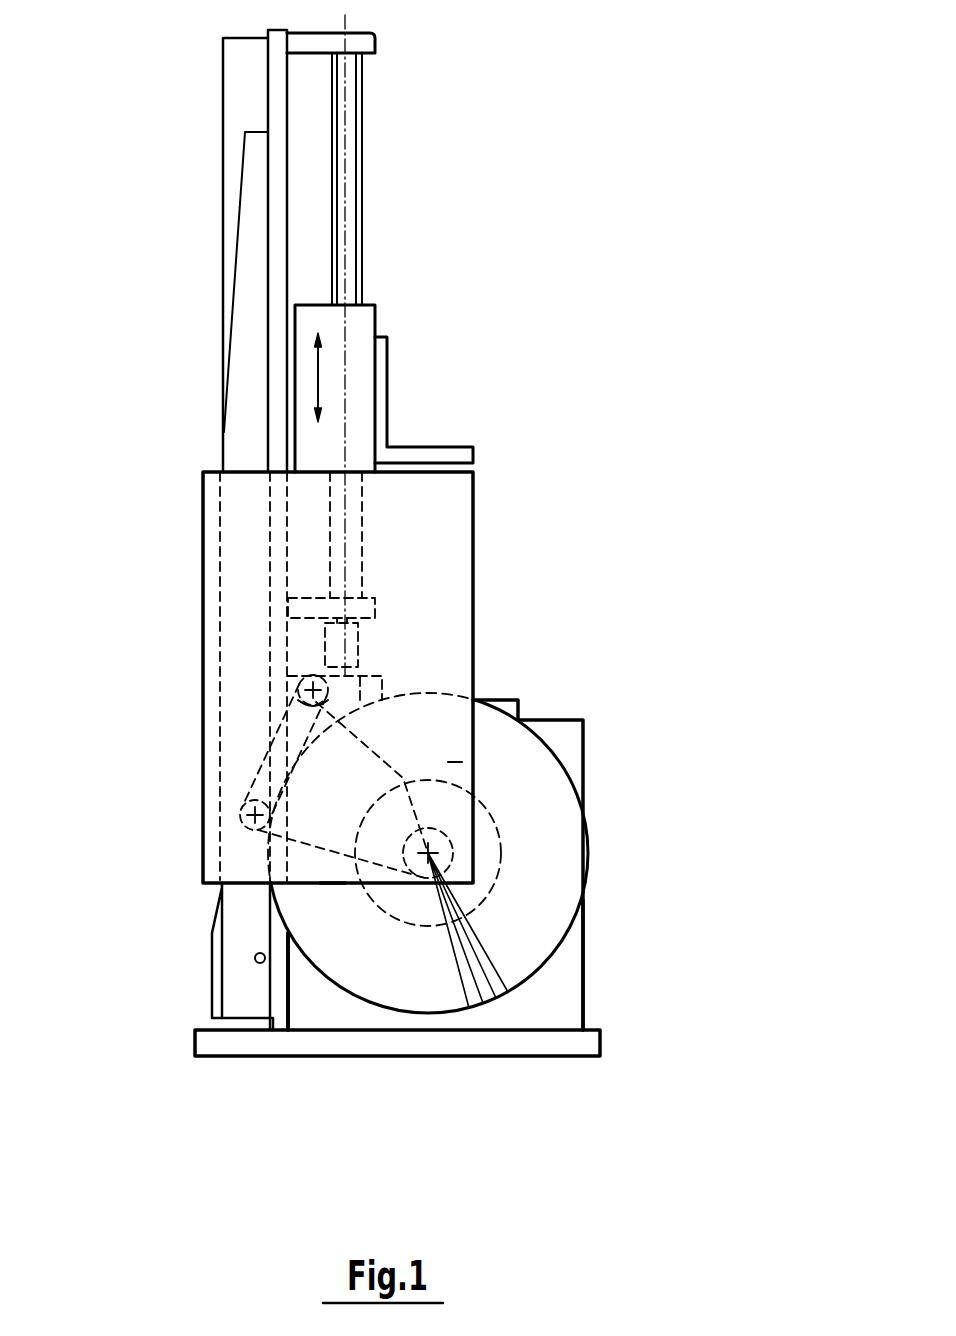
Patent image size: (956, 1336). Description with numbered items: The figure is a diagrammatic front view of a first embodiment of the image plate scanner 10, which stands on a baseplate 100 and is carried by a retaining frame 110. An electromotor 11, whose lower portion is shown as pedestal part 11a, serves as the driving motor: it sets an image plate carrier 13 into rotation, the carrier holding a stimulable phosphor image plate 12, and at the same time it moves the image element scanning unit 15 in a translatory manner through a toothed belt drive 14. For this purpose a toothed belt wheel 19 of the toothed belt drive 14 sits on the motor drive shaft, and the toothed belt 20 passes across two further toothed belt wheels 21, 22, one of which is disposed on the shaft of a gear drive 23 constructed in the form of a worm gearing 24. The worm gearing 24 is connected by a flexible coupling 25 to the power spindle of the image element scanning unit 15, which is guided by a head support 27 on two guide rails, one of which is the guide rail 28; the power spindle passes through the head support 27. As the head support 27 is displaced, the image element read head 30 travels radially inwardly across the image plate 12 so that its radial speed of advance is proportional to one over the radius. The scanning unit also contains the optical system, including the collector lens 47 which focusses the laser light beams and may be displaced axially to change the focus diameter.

The image plate scanner 10 is at (645, 88).
The retaining frame 110 is at (222, 243).
The guide rail 28 is at (362, 125).
The head support 27 is at (355, 370).
The image element scanning unit 15 is at (218, 733).
The flexible coupling 25 is at (345, 642).
The collector lens 47 is at (370, 688).
The gear drive 23 is at (205, 611).
The worm gearing 24 is at (295, 673).
The toothed belt wheel 22 is at (297, 676).
The toothed belt wheel 21 is at (240, 808).
The toothed belt 20 is at (307, 843).
The stimulable phosphor image plate 12 is at (558, 868).
The image plate carrier 13 is at (502, 827).
The toothed belt wheel 19 is at (420, 868).
The image element read head 30 is at (452, 762).
The toothed belt drive 14 is at (332, 857).
The electromotor 11 is at (592, 762).
The pedestal lower part 11a is at (560, 995).
The baseplate 100 is at (222, 1042).